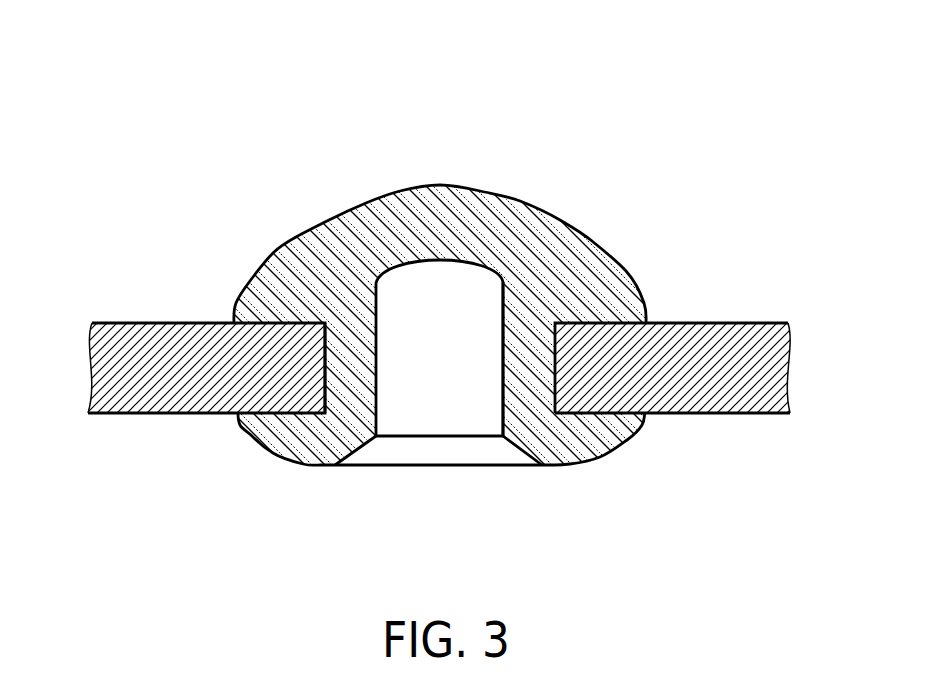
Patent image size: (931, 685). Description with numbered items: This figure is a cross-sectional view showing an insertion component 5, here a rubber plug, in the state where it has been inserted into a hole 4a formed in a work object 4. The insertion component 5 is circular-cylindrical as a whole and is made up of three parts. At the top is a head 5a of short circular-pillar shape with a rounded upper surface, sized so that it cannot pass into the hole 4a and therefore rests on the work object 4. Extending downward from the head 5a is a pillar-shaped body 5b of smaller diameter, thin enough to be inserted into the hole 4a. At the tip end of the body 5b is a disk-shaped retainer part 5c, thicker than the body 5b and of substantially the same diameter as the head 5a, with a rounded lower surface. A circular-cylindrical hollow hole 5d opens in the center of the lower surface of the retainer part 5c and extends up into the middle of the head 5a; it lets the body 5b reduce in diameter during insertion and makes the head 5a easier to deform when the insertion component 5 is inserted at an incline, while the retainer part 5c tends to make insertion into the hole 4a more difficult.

The insertion component 5 is at (424, 284).
The head 5a is at (493, 187).
The body 5b is at (528, 353).
The retainer part 5c is at (578, 435).
The hollow hole 5d is at (503, 380).
The work object 4 is at (135, 322).
The hole 4a is at (330, 366).